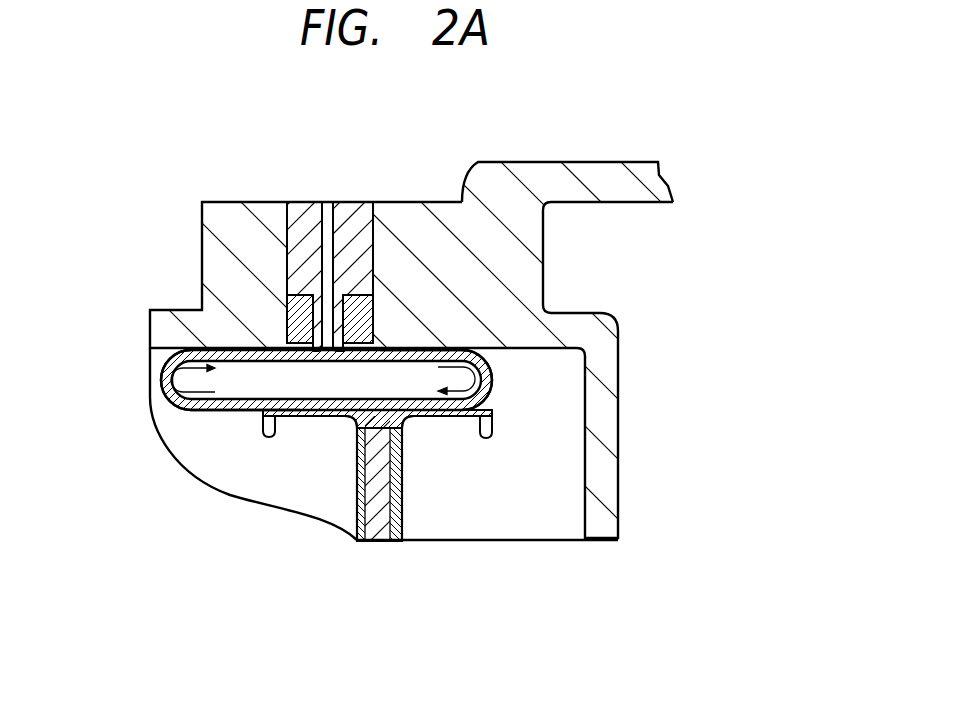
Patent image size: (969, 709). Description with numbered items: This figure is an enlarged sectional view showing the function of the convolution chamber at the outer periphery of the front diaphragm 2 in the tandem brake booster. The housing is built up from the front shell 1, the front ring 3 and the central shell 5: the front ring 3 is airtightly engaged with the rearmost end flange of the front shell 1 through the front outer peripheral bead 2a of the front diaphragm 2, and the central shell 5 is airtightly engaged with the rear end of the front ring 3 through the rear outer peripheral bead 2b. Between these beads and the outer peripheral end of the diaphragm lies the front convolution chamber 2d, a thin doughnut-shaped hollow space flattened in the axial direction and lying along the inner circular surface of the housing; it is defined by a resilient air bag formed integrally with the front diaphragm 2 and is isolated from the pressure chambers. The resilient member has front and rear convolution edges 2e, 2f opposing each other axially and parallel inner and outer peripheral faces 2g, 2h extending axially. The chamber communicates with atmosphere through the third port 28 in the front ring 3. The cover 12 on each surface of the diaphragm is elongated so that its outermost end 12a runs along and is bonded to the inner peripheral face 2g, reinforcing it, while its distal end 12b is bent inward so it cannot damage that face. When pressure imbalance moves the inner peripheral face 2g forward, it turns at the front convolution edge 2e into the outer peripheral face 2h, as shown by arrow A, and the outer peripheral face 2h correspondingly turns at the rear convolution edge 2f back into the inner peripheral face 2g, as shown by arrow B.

The front shell 1 is at (222, 207).
The front diaphragm 2 is at (402, 487).
The front outer peripheral bead 2a is at (293, 318).
The rear outer peripheral bead 2b is at (370, 320).
The front convolution chamber 2d is at (255, 392).
The front convolution edge 2e is at (163, 380).
The rear convolution edge 2f is at (493, 378).
The inner peripheral face 2g is at (220, 410).
The outer peripheral face 2h is at (420, 345).
The front ring 3 is at (310, 208).
The central shell 5 is at (497, 170).
The cover 12 is at (405, 520).
The outermost end 12a is at (325, 416).
The distal end 12b is at (268, 437).
The third port 28 is at (328, 207).